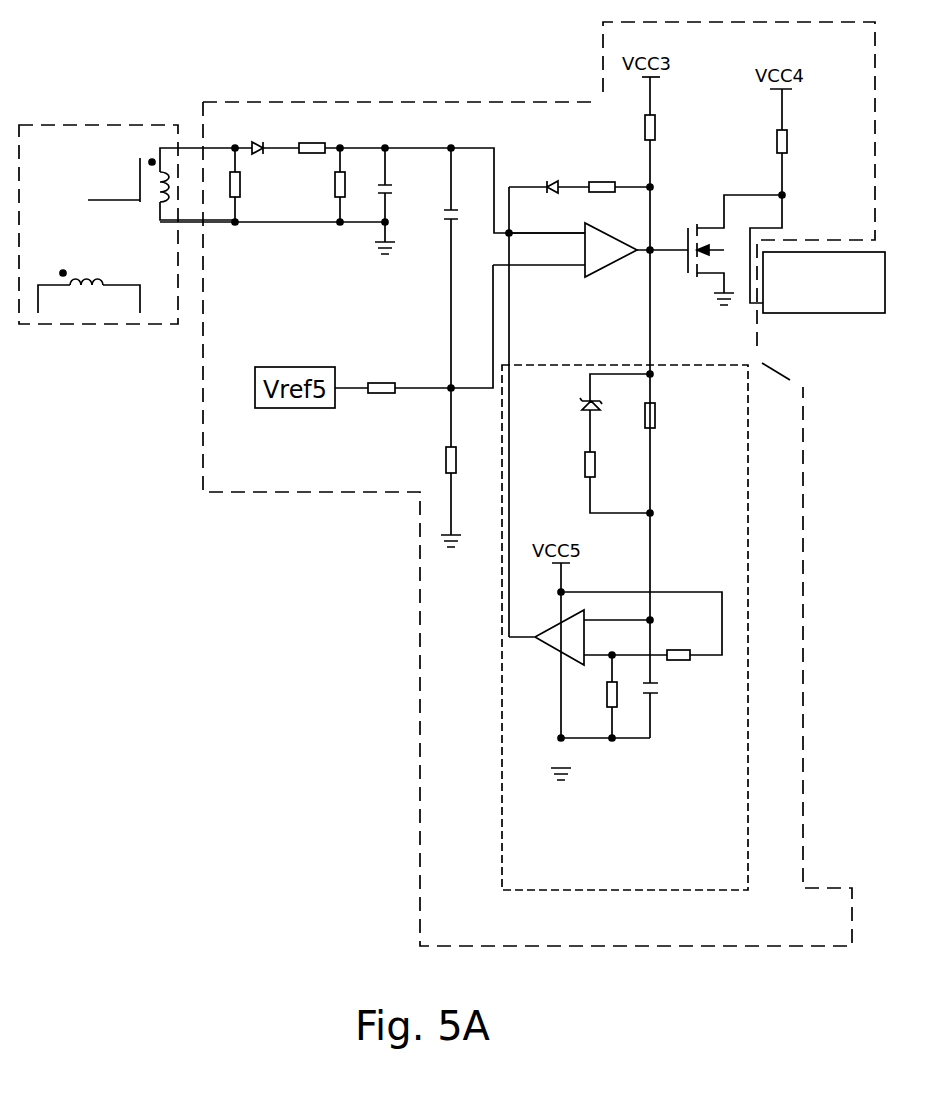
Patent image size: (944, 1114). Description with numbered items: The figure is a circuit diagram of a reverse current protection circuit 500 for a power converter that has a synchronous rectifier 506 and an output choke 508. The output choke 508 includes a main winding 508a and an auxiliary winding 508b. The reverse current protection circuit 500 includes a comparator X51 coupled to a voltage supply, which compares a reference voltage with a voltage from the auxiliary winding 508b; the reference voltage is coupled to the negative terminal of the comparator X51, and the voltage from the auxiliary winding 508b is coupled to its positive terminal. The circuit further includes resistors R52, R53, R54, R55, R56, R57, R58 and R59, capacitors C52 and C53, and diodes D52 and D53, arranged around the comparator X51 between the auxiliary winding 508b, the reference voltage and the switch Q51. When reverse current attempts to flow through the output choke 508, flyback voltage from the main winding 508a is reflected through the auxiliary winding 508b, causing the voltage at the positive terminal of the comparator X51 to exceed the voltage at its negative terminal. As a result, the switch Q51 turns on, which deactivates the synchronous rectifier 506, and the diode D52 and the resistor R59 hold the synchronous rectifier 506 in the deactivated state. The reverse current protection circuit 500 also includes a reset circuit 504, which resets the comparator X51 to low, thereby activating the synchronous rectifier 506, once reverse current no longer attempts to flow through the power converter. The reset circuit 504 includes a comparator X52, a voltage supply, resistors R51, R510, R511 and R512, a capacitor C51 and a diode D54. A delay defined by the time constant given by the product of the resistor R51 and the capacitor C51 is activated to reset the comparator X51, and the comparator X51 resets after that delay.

The reverse current protection circuit 500 is at (402, 102).
The reset circuit 504 is at (748, 855).
The synchronous rectifier 506 is at (838, 314).
The output choke 508 is at (52, 123).
The main winding 508a is at (87, 292).
The auxiliary winding 508b is at (153, 183).
The diode D53 is at (256, 135).
The resistor R55 is at (310, 137).
The resistor R54 is at (255, 185).
The resistor R56 is at (319, 185).
The capacitor C53 is at (402, 201).
The capacitor C52 is at (430, 268).
The comparator X51 is at (590, 264).
The diode D52 is at (541, 170).
The resistor R59 is at (604, 175).
The resistor R53 is at (673, 127).
The switch Q51 is at (729, 250).
The resistor R52 is at (803, 141).
The resistor R57 is at (393, 377).
The resistor R58 is at (429, 467).
The diode D54 is at (569, 404).
The resistor R510 is at (561, 465).
The resistor R51 is at (673, 416).
The comparator X52 is at (546, 642).
The resistor R511 is at (696, 669).
The resistor R512 is at (591, 696).
The capacitor C51 is at (669, 710).